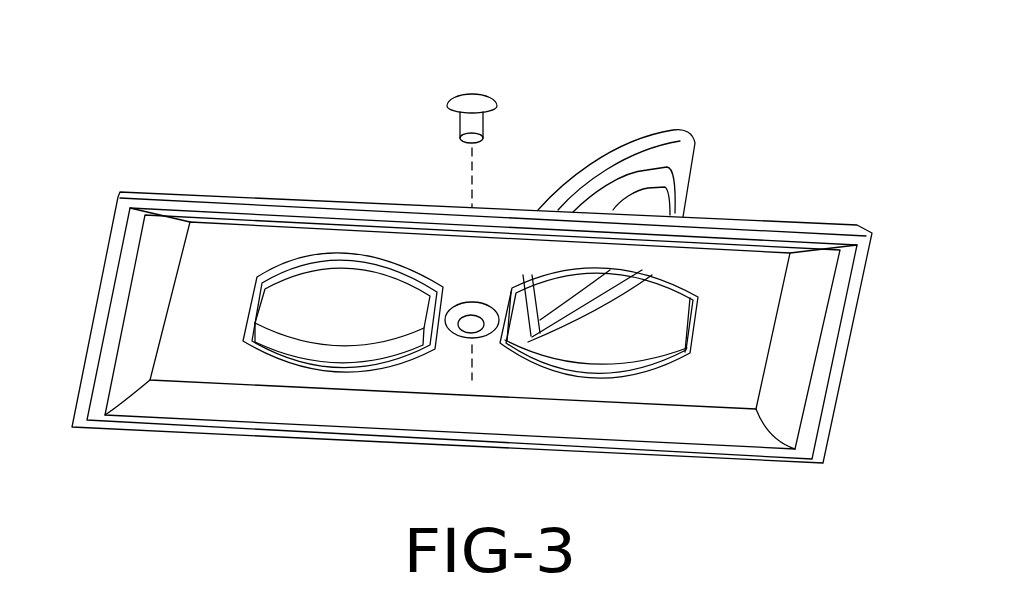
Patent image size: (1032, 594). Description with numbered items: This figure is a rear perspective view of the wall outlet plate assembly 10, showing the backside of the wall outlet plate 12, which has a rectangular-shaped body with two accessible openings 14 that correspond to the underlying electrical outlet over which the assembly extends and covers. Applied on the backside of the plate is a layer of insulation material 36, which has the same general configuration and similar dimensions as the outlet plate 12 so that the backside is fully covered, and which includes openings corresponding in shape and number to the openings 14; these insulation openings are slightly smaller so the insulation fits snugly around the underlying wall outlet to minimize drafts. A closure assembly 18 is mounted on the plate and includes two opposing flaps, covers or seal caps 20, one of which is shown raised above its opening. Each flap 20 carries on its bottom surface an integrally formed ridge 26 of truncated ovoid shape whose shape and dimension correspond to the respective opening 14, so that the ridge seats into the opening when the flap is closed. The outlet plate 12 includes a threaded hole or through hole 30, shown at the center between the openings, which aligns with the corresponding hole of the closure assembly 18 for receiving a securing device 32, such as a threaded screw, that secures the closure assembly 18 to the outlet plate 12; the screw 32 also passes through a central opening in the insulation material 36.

The outlet plate assembly 10 is at (163, 118).
The wall outlet plate 12 is at (840, 355).
The accessible openings 14 is at (625, 337).
The closure assembly 18 is at (595, 160).
The flaps, covers or seal caps 20 is at (337, 313).
The ridge 26 is at (317, 262).
The threaded hole or through hole 30 is at (463, 328).
The securing device 32 is at (472, 95).
The insulation material 36 is at (813, 278).